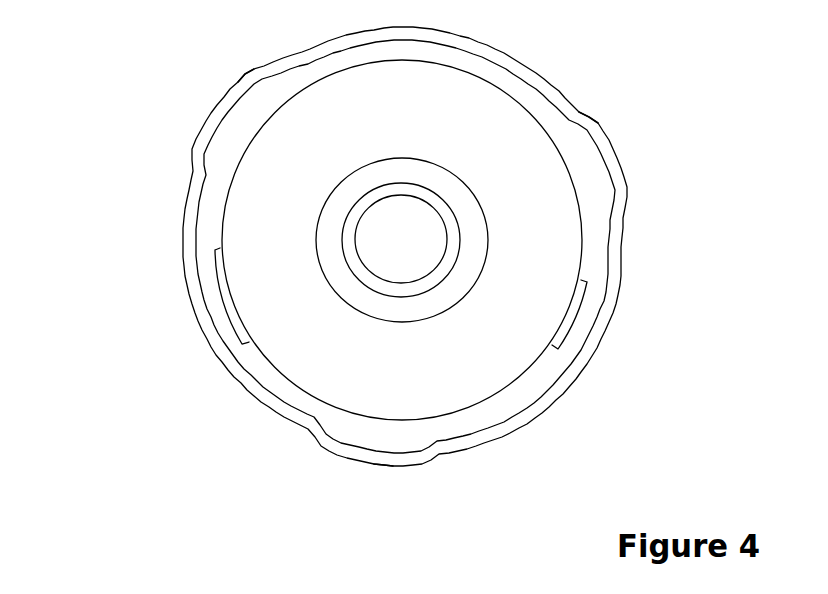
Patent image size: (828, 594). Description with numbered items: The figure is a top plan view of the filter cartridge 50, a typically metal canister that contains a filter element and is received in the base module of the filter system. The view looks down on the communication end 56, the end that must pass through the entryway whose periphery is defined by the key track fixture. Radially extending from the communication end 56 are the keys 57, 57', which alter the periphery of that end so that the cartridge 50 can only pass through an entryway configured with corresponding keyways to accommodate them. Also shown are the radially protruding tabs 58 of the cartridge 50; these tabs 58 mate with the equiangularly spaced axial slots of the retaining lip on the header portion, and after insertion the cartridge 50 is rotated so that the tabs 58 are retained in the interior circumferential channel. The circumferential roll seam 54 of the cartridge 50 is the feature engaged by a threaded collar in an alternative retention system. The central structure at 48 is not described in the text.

The central hub / boss 48 is at (397, 230).
The filter cartridge 50 is at (610, 388).
The circumferential roll seam 54 is at (184, 270).
The communication end 56 is at (242, 233).
The key 57 is at (664, 310).
The key 57' is at (158, 330).
The radially protruding tabs 58 is at (222, 112).